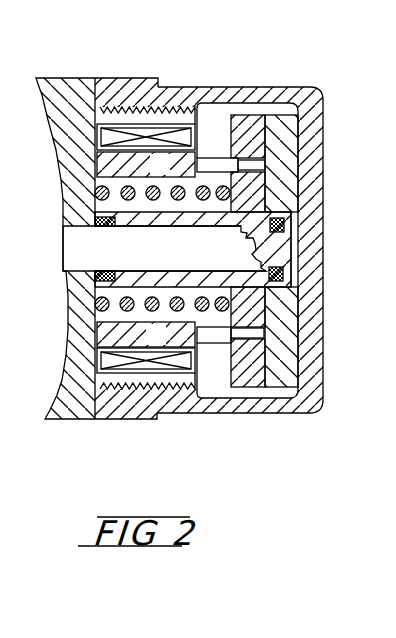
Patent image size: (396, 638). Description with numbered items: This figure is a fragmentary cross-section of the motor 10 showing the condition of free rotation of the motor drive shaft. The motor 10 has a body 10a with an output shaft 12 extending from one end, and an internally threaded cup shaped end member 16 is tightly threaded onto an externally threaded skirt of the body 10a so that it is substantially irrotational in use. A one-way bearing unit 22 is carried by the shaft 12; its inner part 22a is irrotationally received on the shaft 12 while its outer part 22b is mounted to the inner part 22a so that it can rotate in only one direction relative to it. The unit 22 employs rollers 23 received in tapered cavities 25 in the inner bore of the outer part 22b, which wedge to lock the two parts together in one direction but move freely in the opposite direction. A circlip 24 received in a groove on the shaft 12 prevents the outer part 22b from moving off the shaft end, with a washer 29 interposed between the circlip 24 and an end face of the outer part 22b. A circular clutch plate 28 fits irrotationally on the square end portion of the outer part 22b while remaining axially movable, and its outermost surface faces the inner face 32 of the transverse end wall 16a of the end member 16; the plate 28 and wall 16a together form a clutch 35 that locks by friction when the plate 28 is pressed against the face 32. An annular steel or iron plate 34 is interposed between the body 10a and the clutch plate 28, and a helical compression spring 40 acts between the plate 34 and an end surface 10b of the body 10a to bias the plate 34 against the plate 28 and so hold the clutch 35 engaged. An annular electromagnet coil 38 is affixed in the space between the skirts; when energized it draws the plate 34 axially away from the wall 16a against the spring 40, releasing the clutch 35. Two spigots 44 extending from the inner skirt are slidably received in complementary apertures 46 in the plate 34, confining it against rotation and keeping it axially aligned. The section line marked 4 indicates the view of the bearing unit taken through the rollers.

The motor 10 is at (68, 423).
The body 10a is at (72, 355).
The end surface 10b is at (95, 202).
The output shaft 12 is at (62, 253).
The cup shaped end member 16 is at (326, 372).
The transverse end wall 16a is at (309, 268).
The one-way bearing unit 22 is at (304, 212).
The inner part 22a is at (75, 251).
The outer part 22b is at (300, 242).
The rollers 23 is at (121, 227).
The circlip 24 is at (301, 226).
The cavities 25 is at (93, 218).
The clutch plate 28 is at (290, 173).
The washer 29 is at (297, 296).
The inner face 32 is at (273, 124).
The annular steel or iron plate 34 is at (257, 157).
The clutch 35 is at (260, 84).
The annular electromagnet coil 38 is at (138, 373).
The helical compression spring 40 is at (129, 186).
The spigots 44 is at (212, 162).
The apertures 46 is at (300, 107).
The section line FIG. 4 is at (100, 187).